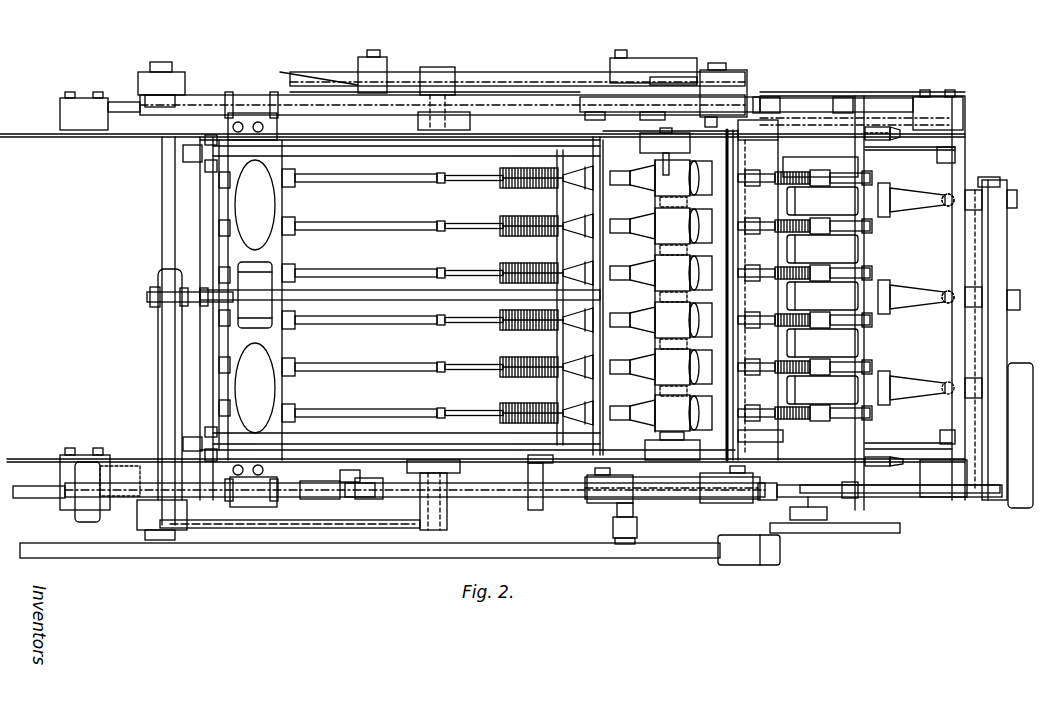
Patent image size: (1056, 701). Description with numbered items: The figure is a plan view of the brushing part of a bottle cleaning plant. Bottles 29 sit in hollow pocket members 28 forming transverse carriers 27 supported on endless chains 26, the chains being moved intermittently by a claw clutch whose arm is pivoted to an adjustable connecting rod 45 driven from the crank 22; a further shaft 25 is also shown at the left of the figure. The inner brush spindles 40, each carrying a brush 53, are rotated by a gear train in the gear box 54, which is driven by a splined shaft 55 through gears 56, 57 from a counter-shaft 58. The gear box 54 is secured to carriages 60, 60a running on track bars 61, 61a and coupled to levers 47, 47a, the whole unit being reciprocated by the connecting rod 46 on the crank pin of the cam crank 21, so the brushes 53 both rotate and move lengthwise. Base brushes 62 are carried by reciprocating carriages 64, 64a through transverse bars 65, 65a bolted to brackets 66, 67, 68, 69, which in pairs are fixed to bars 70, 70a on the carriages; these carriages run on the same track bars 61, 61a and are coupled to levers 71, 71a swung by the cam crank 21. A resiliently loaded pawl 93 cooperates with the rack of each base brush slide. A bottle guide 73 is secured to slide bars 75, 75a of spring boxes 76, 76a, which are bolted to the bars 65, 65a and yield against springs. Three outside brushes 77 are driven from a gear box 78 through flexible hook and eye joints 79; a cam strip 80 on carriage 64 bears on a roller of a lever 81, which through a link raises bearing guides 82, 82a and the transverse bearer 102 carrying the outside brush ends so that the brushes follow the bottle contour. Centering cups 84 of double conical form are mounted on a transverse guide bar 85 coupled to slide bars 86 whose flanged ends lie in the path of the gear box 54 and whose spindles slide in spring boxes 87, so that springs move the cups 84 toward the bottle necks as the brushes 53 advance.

The cam crank 21 is at (805, 94).
The crank 22 is at (840, 533).
The drive shaft 25 is at (30, 498).
The endless chains 26 is at (640, 145).
The transverse carriers 27 is at (672, 200).
The carrier or pocket members 28 is at (700, 240).
The bottle 29 is at (708, 190).
The brush spindles 40 is at (375, 182).
The adjustable connecting rod 45 is at (222, 558).
The connecting rod 46 is at (470, 82).
The pivotal lever 47 is at (373, 528).
The lever 47a is at (403, 68).
The brushes 53 is at (503, 195).
The gear box 54 is at (238, 264).
The splined shaft 55 is at (355, 295).
The gear 56 is at (162, 370).
The gear 57 is at (85, 475).
The counter-shaft 58 is at (540, 500).
The carriage 60 is at (262, 492).
The carriage 60a is at (240, 103).
The track bar 61 is at (520, 497).
The track bar 61a is at (515, 110).
The base brushes 62 is at (742, 296).
The reciprocating carriage 64 is at (618, 500).
The reciprocating carriage 64a is at (640, 105).
The transverse bar 65 is at (860, 115).
The transverse bar 65a is at (785, 160).
The bracket 66 is at (770, 500).
The bracket 67 is at (768, 97).
The bracket 68 is at (848, 98).
The bracket 69 is at (850, 498).
The bar 70 is at (808, 520).
The bar 70a is at (813, 100).
The lever 71 is at (625, 545).
The lever 71a is at (620, 68).
The bottle guide 73 is at (735, 95).
The slide bar 75 is at (896, 467).
The slide bar 75a is at (885, 140).
The spring box 76 is at (850, 450).
The spring box 76a is at (903, 104).
The outside brushes 77 is at (910, 290).
The gear box 78 is at (1005, 283).
The flexible hook and eye joints 79 is at (946, 196).
The cam strip 80 is at (648, 460).
The lever 81 is at (532, 466).
The bearing guide 82 is at (893, 447).
The bearing guide 82a is at (955, 157).
The centering cups 84 is at (575, 195).
The transverse guide bar 85 is at (568, 150).
The slide bars 86 is at (362, 150).
The spring boxes 87 is at (195, 152).
The pawl 93 is at (812, 186).
The transverse bearer 102 is at (783, 436).